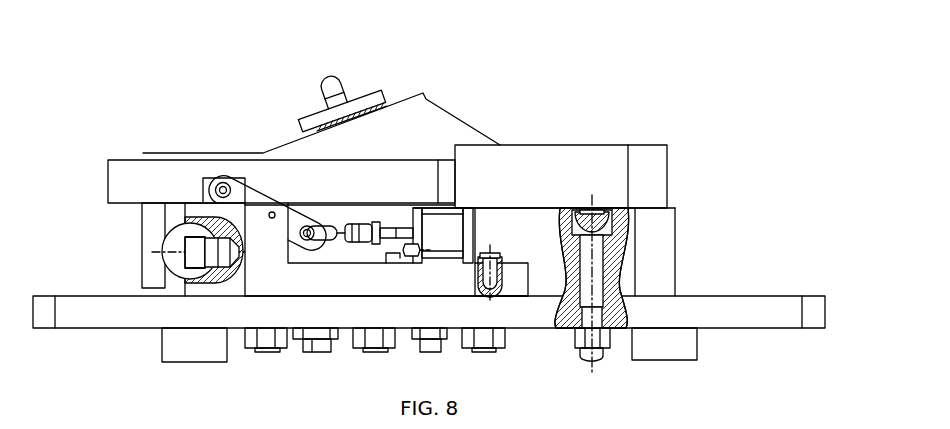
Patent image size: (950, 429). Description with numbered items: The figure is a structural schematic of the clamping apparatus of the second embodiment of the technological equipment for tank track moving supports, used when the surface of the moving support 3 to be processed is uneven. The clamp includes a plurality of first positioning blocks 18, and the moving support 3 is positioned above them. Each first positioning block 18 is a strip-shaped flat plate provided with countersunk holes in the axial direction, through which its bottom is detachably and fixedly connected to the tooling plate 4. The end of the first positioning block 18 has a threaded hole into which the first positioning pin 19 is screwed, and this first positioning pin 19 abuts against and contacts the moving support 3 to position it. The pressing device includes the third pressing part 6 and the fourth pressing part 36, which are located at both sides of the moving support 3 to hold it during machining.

The moving support 3 is at (592, 165).
The tooling plate 4 is at (429, 288).
The third pressing part 6 is at (336, 85).
The first positioning block 18 is at (146, 218).
The first positioning pin 19 is at (143, 223).
The fourth pressing part 36 is at (186, 176).